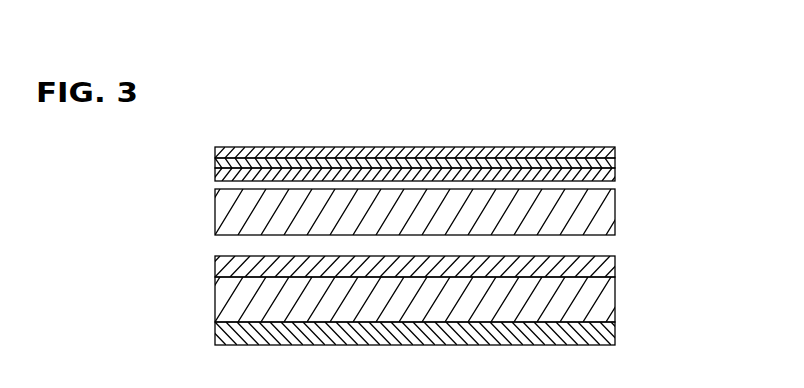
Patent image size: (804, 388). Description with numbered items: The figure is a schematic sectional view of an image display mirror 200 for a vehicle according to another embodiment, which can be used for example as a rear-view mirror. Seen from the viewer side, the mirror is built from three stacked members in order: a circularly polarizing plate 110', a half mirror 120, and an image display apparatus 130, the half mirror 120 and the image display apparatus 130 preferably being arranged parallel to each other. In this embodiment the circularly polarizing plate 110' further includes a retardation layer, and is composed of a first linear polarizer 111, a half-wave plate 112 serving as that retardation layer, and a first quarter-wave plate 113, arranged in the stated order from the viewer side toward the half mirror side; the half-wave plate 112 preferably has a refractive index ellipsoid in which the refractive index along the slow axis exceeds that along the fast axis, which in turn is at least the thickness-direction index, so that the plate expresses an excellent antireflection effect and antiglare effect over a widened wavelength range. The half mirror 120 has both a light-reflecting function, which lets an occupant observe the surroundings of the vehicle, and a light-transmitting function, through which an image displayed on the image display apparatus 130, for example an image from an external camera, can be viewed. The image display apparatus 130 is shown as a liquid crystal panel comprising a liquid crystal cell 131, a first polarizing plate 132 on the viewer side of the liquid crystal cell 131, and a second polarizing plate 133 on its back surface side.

The image display mirror 200 is at (659, 94).
The circularly polarizing plate 110' is at (489, 151).
The first linear polarizer 111 is at (615, 150).
The λ/2 plate 112 is at (615, 160).
The first λ/4 plate 113 is at (615, 172).
The half mirror 120 is at (615, 215).
The image display apparatus 130 is at (713, 265).
The liquid crystal cell 131 is at (612, 300).
The first polarizing plate 132 is at (615, 265).
The second polarizing plate 133 is at (615, 330).